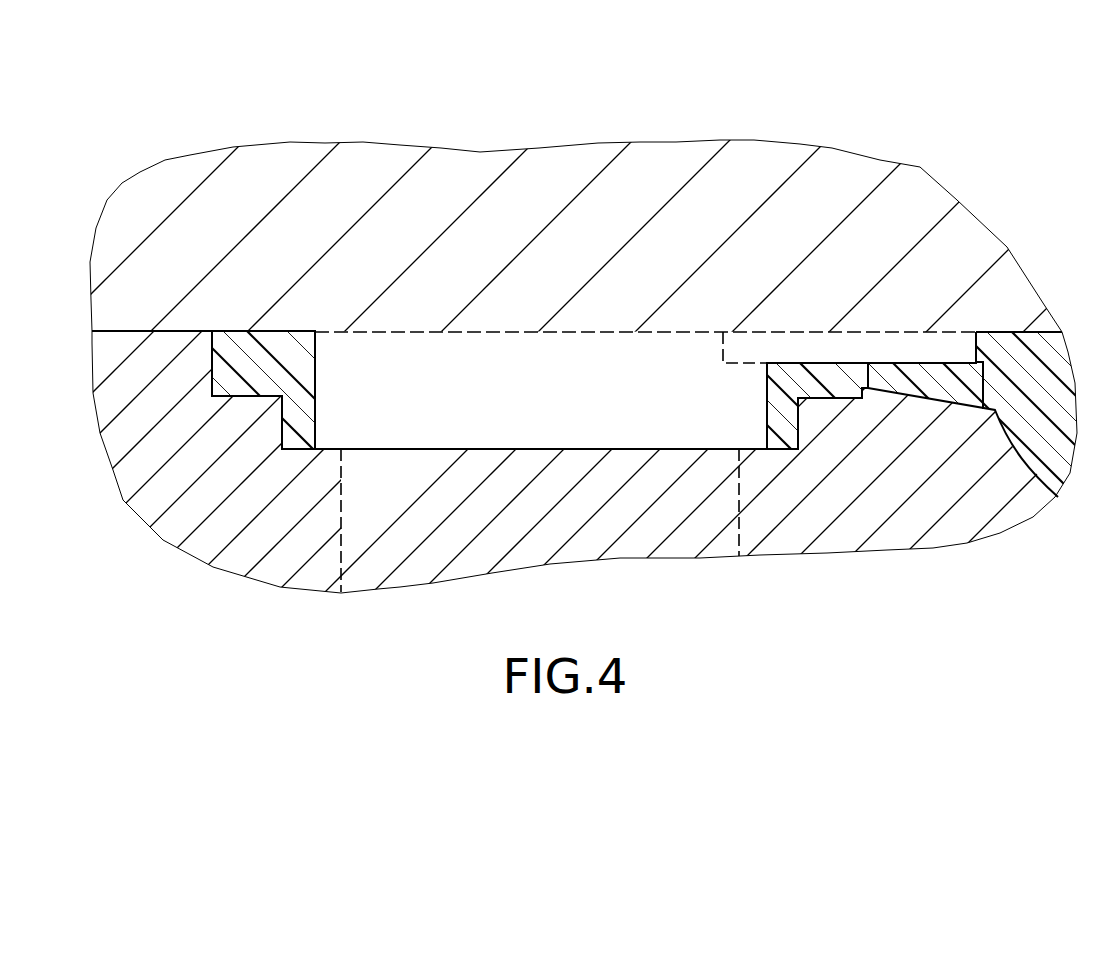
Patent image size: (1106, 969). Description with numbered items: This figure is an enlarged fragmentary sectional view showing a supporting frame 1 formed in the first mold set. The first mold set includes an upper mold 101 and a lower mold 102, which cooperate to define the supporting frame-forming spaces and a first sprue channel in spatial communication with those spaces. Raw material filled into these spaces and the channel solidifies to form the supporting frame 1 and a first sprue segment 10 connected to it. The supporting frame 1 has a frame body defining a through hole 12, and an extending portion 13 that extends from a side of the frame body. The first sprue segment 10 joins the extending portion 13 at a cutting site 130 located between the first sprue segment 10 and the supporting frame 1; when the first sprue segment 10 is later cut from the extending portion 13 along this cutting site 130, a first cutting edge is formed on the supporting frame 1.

The supporting frame 1 is at (259, 322).
The first sprue segment 10 is at (922, 377).
The upper mold 101 is at (450, 167).
The lower mold 102 is at (930, 503).
The through hole 12 is at (313, 410).
The extending portion 13 is at (793, 352).
The cutting site 130 is at (867, 376).